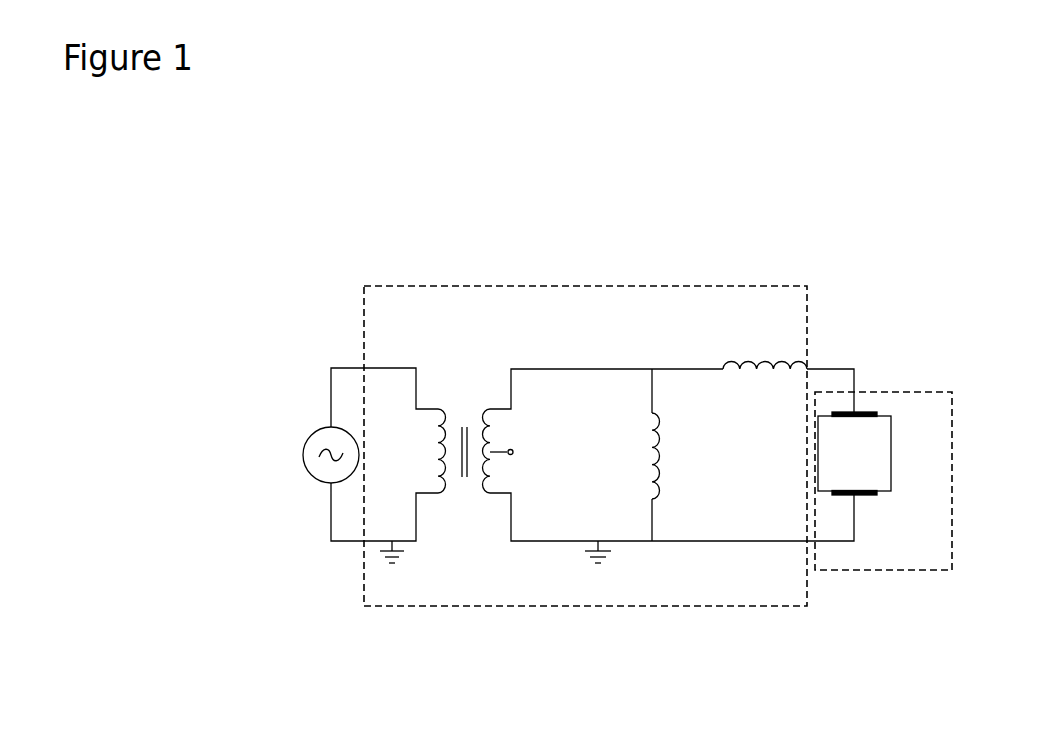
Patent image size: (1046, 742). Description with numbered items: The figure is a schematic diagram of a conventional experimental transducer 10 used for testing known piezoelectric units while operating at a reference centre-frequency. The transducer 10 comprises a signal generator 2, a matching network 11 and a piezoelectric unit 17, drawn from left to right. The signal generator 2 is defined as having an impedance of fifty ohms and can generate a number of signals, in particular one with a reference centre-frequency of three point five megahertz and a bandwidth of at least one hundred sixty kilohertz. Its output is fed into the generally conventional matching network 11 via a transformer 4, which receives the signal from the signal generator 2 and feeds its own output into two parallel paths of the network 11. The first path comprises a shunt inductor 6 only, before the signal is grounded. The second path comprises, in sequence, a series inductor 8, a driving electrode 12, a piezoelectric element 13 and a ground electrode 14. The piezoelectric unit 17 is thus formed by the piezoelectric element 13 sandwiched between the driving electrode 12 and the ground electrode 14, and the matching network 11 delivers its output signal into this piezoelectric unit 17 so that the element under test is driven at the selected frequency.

The transducer 10 is at (322, 186).
The signal generator 2 is at (308, 428).
The transformer 4 is at (475, 428).
The shunt inductor 6 is at (672, 455).
The series inductor 8 is at (753, 388).
The matching network 11 is at (585, 446).
The driving electrode 12 is at (860, 400).
The piezoelectric element 13 is at (854, 453).
The ground electrode 14 is at (875, 513).
The piezoelectric unit 17 is at (883, 481).